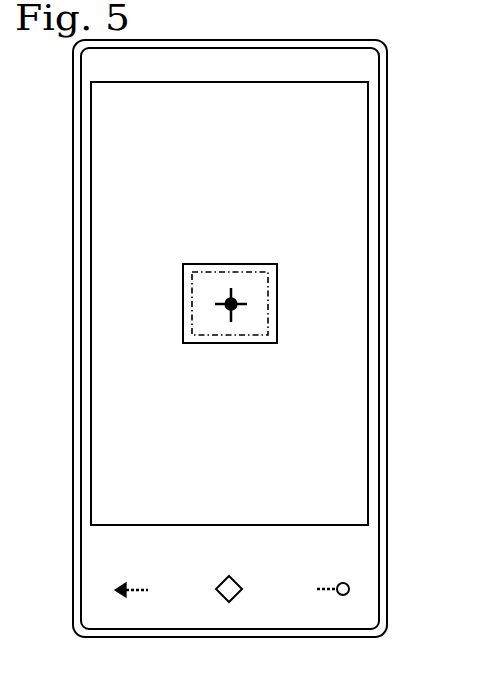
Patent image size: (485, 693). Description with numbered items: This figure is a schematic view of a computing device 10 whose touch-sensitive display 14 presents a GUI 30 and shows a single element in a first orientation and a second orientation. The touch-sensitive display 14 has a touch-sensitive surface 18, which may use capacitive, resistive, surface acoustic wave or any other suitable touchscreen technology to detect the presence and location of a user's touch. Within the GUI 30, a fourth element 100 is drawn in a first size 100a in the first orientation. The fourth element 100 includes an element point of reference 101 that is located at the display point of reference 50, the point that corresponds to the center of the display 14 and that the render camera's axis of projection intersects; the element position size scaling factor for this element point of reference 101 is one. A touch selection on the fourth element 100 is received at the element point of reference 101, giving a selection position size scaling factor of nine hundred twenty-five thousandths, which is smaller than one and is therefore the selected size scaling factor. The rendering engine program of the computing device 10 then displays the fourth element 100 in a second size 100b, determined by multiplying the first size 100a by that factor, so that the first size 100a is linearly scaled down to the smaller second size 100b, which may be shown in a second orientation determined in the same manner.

The computing device 10 is at (73, 570).
The touch-sensitive display 14 is at (265, 534).
The touch-sensitive surface 18 is at (350, 482).
The GUI 30 is at (118, 167).
The display point of reference 50 is at (233, 299).
The fourth element 100 is at (242, 321).
The first size 100a is at (278, 333).
The second size 100b is at (270, 305).
The element point of reference 101 is at (228, 300).